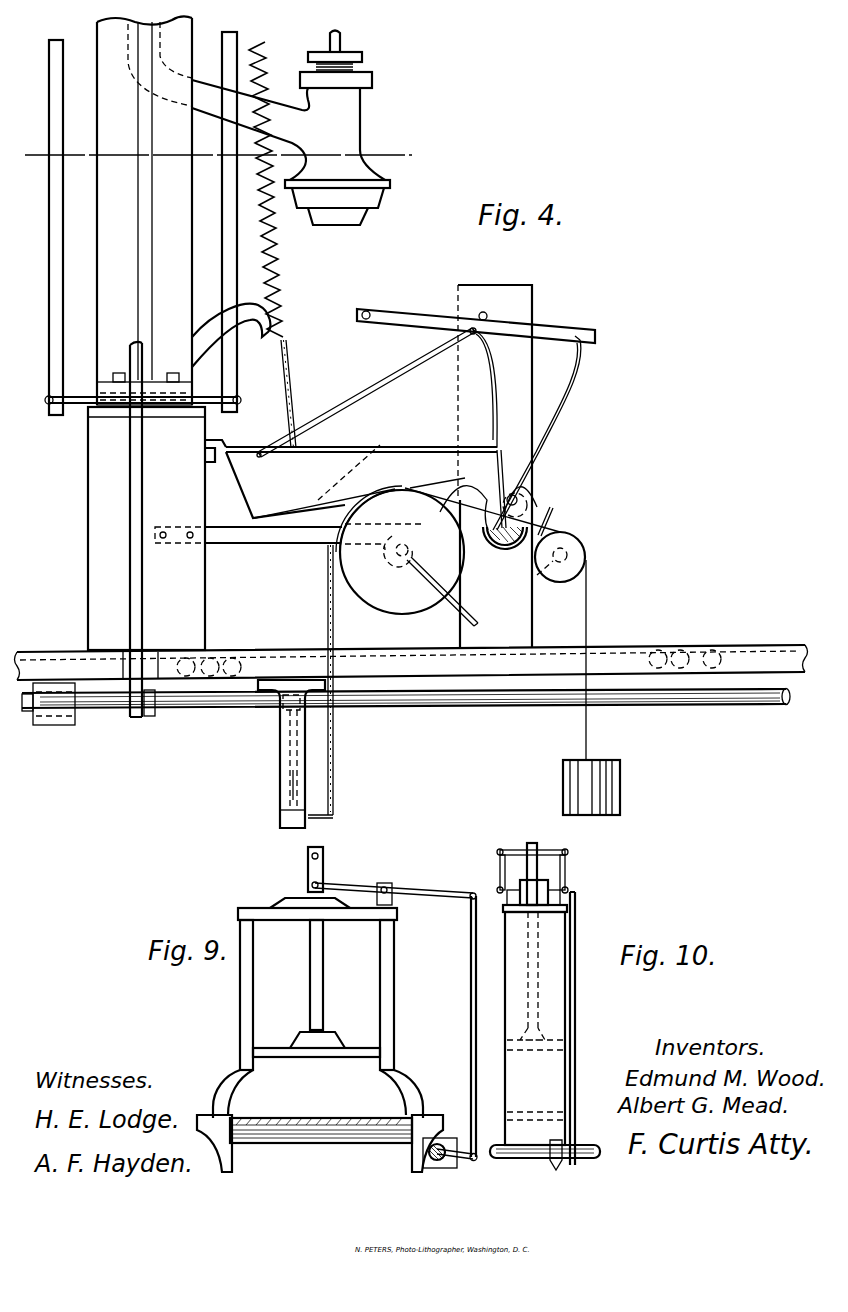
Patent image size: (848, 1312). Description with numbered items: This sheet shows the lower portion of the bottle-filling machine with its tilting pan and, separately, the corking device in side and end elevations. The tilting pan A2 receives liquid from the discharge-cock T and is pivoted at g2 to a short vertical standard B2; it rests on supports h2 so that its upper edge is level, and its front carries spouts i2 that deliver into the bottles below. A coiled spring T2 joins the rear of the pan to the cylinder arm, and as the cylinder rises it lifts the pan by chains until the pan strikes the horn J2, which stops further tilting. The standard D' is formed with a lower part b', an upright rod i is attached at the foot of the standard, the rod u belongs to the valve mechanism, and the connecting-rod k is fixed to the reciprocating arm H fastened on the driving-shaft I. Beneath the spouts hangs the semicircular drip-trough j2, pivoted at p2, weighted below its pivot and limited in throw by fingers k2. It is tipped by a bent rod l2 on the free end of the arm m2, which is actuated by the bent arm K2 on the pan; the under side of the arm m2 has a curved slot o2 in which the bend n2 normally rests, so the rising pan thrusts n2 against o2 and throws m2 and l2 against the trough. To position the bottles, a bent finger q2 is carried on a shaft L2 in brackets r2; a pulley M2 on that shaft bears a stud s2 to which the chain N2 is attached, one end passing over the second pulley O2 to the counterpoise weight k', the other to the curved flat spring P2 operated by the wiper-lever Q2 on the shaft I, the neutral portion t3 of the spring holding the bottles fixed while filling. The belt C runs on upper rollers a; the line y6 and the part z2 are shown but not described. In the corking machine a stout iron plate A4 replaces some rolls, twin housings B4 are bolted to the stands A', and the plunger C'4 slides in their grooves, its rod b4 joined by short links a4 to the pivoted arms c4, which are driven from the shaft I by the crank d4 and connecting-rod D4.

In FIG. 4, the upright rod i is at (135, 223).
In FIG. 4, the standard D' is at (143, 210).
In FIG. 4, the coiled spring T2 is at (267, 189).
In FIG. 4, the discharge-cock T is at (250, 117).
In FIG. 4, the rod u is at (341, 42).
In FIG. 4, the section line y6 is at (217, 158).
In FIG. 4, the horn J2 is at (231, 335).
In FIG. 4, the support h2 is at (215, 440).
In FIG. 4, the standard part b' is at (146, 528).
In FIG. 4, the connecting-rod k is at (149, 529).
In FIG. 4, the reciprocating arm H is at (153, 716).
In FIG. 4, the bracket r2 is at (248, 534).
In FIG. 4, the tilting pan A2 is at (361, 466).
In FIG. 4, the bent arm K2 is at (366, 392).
In FIG. 4, the curved slot o2 is at (468, 331).
In FIG. 4, the bend n2 is at (479, 338).
In FIG. 4, the arm m2 is at (476, 324).
In FIG. 4, the standard B2 is at (495, 466).
In FIG. 4, the bent rod l2 is at (537, 433).
In FIG. 4, the pivot g2 is at (504, 462).
In FIG. 4, the spout i2 is at (488, 500).
In FIG. 4, the pivot p2 is at (518, 498).
In FIG. 4, the finger k2 is at (553, 513).
In FIG. 4, the drip-trough j2 is at (508, 546).
In FIG. 4, the second pulley O2 is at (495, 624).
In FIG. 4, the weight k' is at (591, 787).
In FIG. 4, the pulley M2 is at (360, 546).
In FIG. 4, the shaft L2 is at (408, 546).
In FIG. 4, the bent finger q2 is at (442, 595).
In FIG. 4, the stud s2 is at (328, 556).
In FIG. 4, the chain N2 is at (318, 681).
In FIG. 4, the endless belt C is at (411, 648).
In FIG. 9, the endless belt C is at (321, 1116).
In FIG. 4, the upper roller a is at (200, 664).
In FIG. 4, the driving-shaft I is at (406, 705).
In FIG. 9, the driving-shaft I is at (443, 1146).
In FIG. 10, the driving-shaft I is at (530, 1159).
In FIG. 4, the curved flat spring P2 is at (285, 768).
In FIG. 4, the wiper-lever Q2 is at (288, 737).
In FIG. 4, the neutral portion t3 is at (303, 777).
In FIG. 4, the block z2 is at (292, 819).
In FIG. 9, the link a4 is at (308, 873).
In FIG. 10, the link a4 is at (505, 874).
In FIG. 9, the plunger rod b4 is at (325, 870).
In FIG. 10, the plunger rod b4 is at (528, 861).
In FIG. 9, the pivoted arm c4 is at (395, 888).
In FIG. 10, the pivoted arm c4 is at (511, 902).
In FIG. 9, the connecting-rod D4 is at (462, 1028).
In FIG. 10, the connecting-rod D4 is at (585, 1028).
In FIG. 9, the crank d4 is at (452, 1162).
In FIG. 10, the crank d4 is at (566, 1165).
In FIG. 9, the housing B4 is at (319, 984).
In FIG. 9, the plunger C'4 is at (316, 1043).
In FIG. 9, the iron plate A4 is at (318, 1116).
In FIG. 10, the iron plate A4 is at (535, 1025).
In FIG. 9, the stand A' is at (320, 1145).